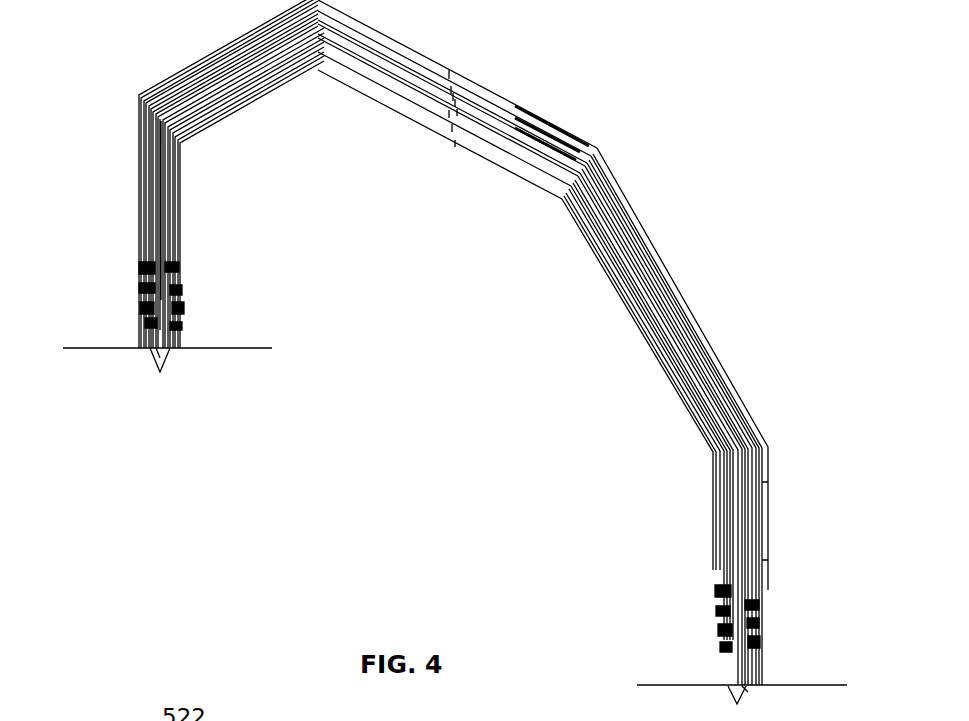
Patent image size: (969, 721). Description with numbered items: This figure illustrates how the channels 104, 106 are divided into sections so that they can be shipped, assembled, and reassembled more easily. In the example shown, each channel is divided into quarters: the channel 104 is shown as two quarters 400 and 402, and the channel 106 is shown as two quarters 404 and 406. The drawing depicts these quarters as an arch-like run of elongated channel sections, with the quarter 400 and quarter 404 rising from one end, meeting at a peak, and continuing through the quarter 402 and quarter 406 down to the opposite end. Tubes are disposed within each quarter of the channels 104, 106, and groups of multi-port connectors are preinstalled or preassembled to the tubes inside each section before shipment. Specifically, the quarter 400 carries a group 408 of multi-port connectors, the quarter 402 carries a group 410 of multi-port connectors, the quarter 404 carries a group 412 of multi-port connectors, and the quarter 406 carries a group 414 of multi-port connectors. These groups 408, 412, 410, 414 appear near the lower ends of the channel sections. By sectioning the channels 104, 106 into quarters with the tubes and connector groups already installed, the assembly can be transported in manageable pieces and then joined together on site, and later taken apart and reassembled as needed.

The quarter 400 is at (432, 342).
The quarter 404 is at (178, 75).
The quarter 406 is at (683, 313).
The quarter 402 is at (640, 318).
The channel 104 is at (484, 164).
The channel 106 is at (648, 236).
The group of multi-port connectors 408 is at (186, 303).
The group of multi-port connectors 412 is at (134, 269).
The group of multi-port connectors 410 is at (713, 610).
The group of multi-port connectors 414 is at (772, 630).